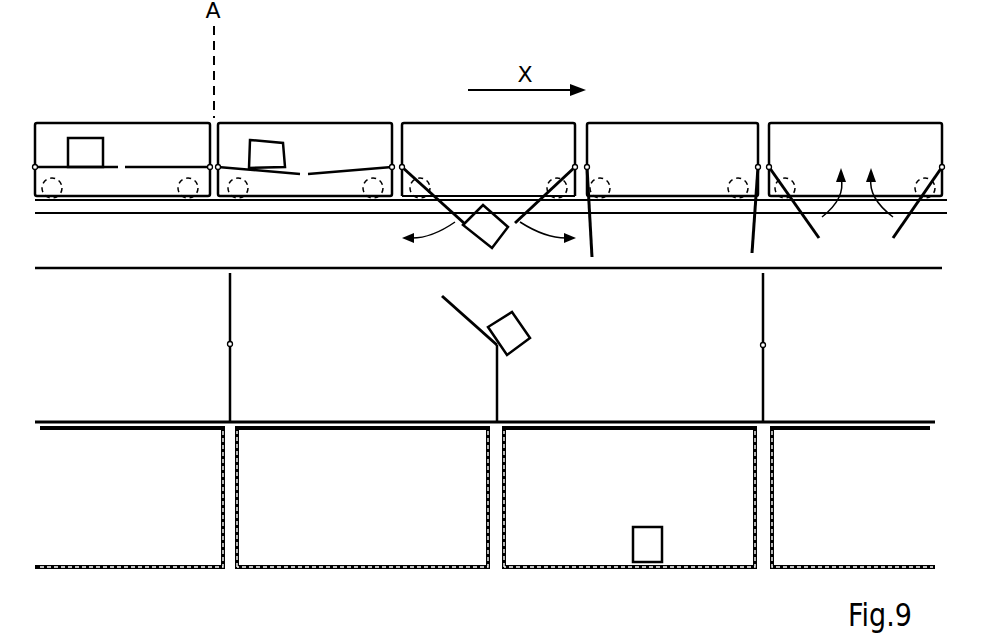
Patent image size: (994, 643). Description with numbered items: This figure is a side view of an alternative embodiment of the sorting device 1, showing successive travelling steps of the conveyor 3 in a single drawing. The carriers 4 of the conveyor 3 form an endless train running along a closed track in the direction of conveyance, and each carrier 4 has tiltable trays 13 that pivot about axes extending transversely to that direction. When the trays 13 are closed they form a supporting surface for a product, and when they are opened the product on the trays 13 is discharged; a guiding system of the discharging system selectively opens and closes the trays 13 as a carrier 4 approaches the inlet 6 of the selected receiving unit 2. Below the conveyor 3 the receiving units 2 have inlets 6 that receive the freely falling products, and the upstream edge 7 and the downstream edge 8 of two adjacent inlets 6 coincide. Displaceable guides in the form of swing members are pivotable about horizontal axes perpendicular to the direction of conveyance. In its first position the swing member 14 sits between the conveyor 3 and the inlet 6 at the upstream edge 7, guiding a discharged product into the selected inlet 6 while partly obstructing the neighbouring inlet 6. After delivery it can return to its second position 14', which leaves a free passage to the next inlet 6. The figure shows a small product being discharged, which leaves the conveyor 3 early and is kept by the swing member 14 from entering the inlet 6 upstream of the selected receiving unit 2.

The sorting device 1 is at (840, 88).
The receiving unit 2 is at (588, 415).
The conveyor 3 is at (344, 122).
The carrier 4 is at (307, 143).
The inlet 6 is at (605, 355).
The upstream edge 7 is at (497, 394).
The downstream edge 8 is at (763, 403).
The tiltable tray 13 is at (362, 166).
The swing member 14 is at (457, 461).
The swing member in second position 14' is at (718, 450).